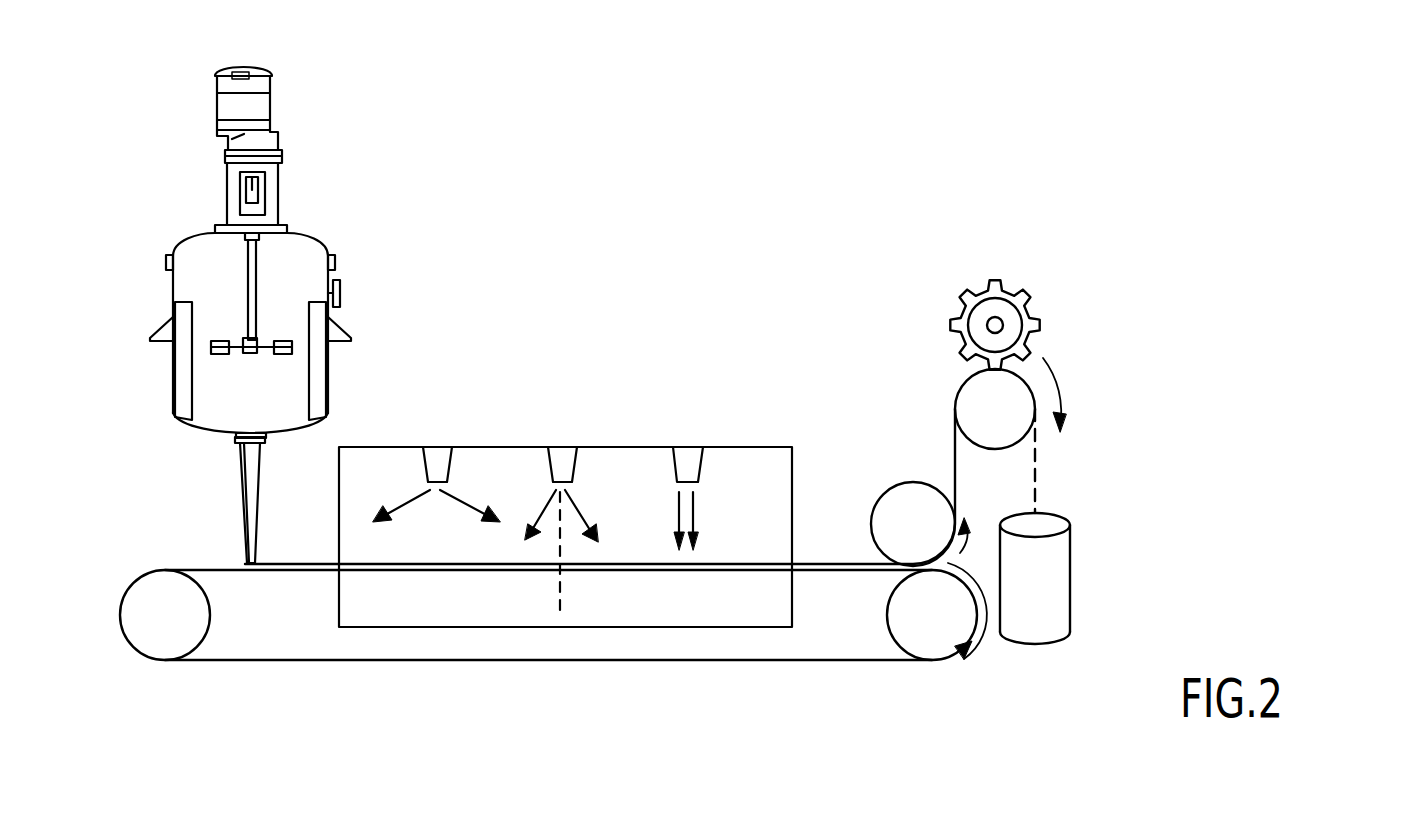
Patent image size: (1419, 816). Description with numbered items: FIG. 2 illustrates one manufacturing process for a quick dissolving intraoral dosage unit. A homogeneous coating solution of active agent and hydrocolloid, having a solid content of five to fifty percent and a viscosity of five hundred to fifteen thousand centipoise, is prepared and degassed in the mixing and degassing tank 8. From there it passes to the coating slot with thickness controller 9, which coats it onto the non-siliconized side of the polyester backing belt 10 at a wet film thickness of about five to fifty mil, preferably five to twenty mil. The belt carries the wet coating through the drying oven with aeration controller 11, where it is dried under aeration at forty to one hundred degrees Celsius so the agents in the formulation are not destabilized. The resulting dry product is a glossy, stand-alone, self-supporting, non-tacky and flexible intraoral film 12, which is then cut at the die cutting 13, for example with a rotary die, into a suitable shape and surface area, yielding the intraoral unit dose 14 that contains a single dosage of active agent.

The mixing and degassing tank 8 is at (297, 255).
The coating slot with thickness controller 9 is at (250, 563).
The polyester backing belt 10 is at (585, 660).
The drying oven with aeration controller 11 is at (505, 447).
The intraoral film 12 is at (833, 562).
The die cutting 13 is at (972, 288).
The intraoral unit dose 14 is at (1232, 412).